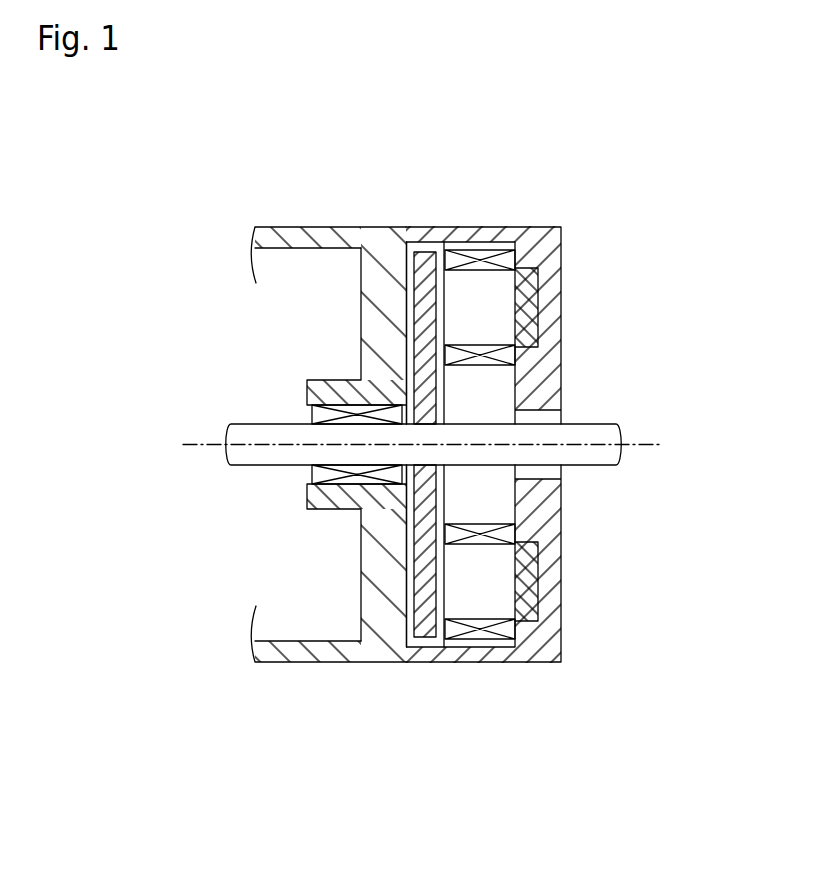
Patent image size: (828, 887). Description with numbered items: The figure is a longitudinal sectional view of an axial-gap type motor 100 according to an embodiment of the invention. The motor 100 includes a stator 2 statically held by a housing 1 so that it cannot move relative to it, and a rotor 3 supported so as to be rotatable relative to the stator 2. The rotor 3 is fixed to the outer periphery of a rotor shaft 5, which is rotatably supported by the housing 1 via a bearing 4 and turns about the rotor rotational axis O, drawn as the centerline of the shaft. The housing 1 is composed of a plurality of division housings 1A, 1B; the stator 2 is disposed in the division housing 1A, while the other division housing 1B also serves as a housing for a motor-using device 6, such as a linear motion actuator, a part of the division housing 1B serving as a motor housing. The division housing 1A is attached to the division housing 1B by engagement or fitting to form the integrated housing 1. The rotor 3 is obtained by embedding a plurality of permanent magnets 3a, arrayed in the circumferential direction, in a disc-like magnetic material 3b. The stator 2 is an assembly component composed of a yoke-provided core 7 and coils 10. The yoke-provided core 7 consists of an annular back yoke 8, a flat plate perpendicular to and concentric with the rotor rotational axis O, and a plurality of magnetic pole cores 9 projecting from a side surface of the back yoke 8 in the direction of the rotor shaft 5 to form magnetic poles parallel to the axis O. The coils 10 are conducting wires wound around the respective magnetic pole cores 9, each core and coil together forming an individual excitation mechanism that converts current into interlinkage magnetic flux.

The axial-gap type motor 100 is at (550, 228).
The housing 1 is at (497, 740).
The division housing 1A is at (497, 658).
The division housing 1B is at (398, 656).
The stator 2 is at (492, 243).
The rotor 3 is at (421, 243).
The permanent magnets 3a is at (405, 310).
The disc-like magnetic material 3b is at (407, 368).
The bearing 4 is at (317, 475).
The rotor shaft 5 is at (283, 435).
The motor-using device 6 is at (303, 665).
The yoke-provided core 7 is at (634, 232).
The back yoke 8 is at (523, 308).
The magnetic pole cores 9 is at (493, 290).
The coils 10 is at (470, 250).
The rotor rotational axis O is at (643, 443).